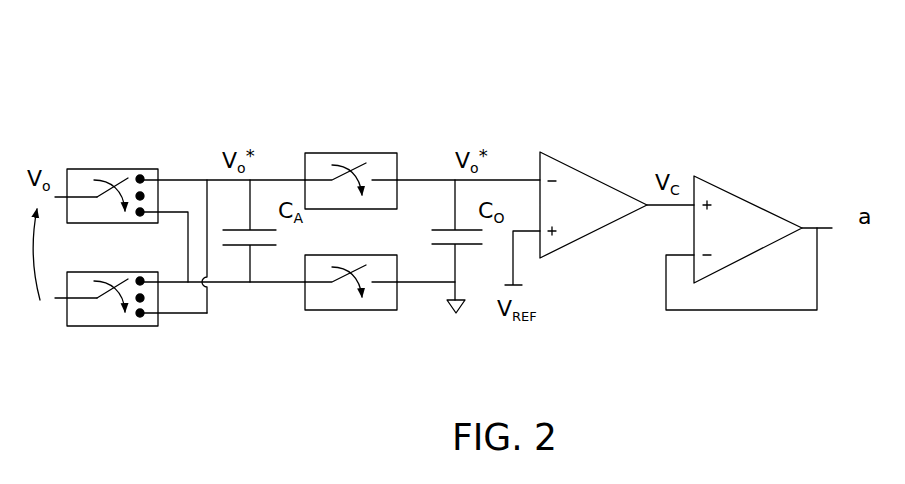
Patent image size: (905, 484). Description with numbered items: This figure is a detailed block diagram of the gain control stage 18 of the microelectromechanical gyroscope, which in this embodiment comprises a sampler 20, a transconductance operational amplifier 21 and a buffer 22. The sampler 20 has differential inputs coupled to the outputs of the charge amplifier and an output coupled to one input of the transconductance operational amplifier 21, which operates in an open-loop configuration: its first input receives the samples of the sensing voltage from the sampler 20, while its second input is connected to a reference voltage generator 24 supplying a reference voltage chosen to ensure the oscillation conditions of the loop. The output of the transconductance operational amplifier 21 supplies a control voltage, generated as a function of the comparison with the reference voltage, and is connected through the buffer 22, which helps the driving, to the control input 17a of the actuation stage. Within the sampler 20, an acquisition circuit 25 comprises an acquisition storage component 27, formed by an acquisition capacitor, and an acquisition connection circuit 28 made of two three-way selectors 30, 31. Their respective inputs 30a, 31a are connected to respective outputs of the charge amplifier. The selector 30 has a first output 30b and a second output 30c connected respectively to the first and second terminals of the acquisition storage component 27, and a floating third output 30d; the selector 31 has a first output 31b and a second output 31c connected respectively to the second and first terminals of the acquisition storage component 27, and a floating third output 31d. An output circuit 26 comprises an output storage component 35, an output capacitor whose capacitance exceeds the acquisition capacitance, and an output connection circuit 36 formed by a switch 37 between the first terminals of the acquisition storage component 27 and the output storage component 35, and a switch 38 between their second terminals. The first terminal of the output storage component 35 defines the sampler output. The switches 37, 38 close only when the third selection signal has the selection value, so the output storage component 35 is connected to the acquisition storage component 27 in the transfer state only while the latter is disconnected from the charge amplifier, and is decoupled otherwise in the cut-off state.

The gain control stage 18 is at (710, 68).
The sampler 20 is at (293, 96).
The transconductance operational amplifier 21 is at (583, 172).
The buffer 22 is at (733, 190).
The reference voltage generator 24 is at (522, 284).
The acquisition circuit 25 is at (177, 108).
The output circuit 26 is at (437, 122).
The acquisition storage component 27 is at (258, 247).
The acquisition connection circuit 28 is at (120, 374).
The three-way selector 30 is at (90, 168).
The input 30a is at (63, 197).
The first output 30b is at (138, 178).
The second output 30c is at (142, 214).
The third output 30d is at (143, 196).
The three-way selector 31 is at (90, 327).
The input 31a is at (63, 300).
The first output 31b is at (138, 280).
The second output 31c is at (138, 317).
The third output 31d is at (145, 300).
The output storage component 35 is at (437, 247).
The output connection circuit 36 is at (325, 341).
The switch 37 is at (363, 153).
The switch 38 is at (365, 311).
The control input 17a is at (845, 243).